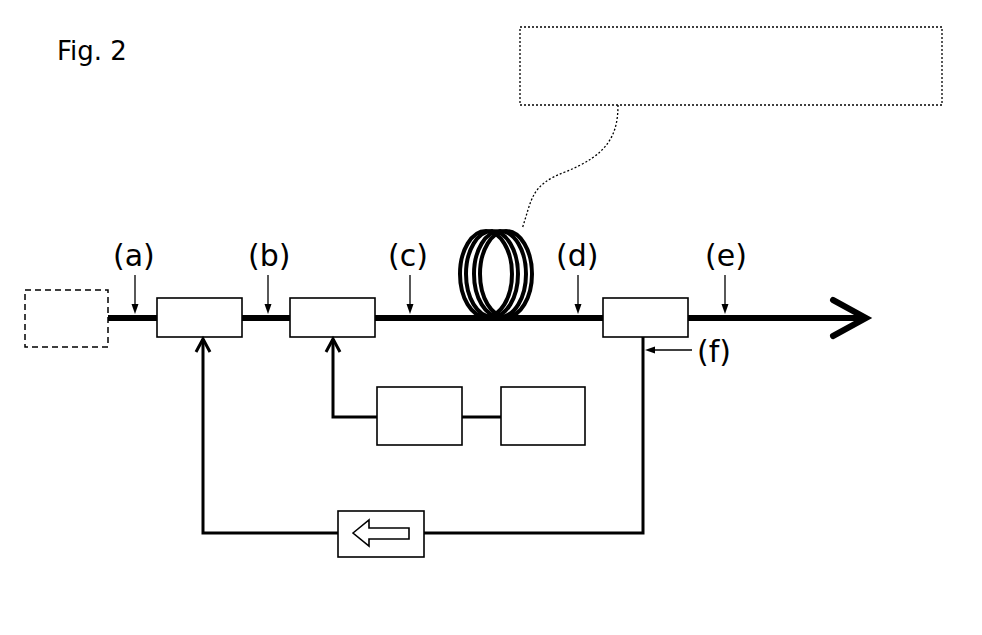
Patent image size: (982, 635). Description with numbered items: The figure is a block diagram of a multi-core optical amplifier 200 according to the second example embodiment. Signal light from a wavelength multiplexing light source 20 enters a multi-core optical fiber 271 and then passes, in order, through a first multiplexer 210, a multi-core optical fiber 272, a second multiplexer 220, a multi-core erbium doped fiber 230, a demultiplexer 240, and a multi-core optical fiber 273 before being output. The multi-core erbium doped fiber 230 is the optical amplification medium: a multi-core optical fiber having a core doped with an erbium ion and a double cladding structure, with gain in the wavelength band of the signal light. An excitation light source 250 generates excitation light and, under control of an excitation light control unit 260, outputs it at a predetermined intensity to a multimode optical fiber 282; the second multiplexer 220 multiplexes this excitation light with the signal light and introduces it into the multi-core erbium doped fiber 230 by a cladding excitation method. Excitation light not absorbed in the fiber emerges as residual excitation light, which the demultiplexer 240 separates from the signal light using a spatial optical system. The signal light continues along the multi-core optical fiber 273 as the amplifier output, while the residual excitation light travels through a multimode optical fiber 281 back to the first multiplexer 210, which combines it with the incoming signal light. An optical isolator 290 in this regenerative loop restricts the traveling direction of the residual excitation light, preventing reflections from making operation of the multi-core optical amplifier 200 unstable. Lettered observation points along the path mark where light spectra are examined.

The wavelength multiplexing light source 20 is at (60, 290).
The multi-core optical amplifier 200 is at (438, 113).
The first multiplexer 210 is at (198, 298).
The second multiplexer 220 is at (333, 298).
The multi-core erbium doped fiber 230 is at (500, 229).
The demultiplexer 240 is at (651, 298).
The excitation light source 250 is at (452, 446).
The excitation light control unit 260 is at (546, 446).
The multi-core optical fiber 271 is at (142, 322).
The multi-core optical fiber 272 is at (263, 322).
The multi-core optical fiber 273 is at (772, 322).
The multimode optical fiber 281 is at (201, 450).
The multimode optical fiber 282 is at (331, 408).
The optical isolator 290 is at (382, 558).